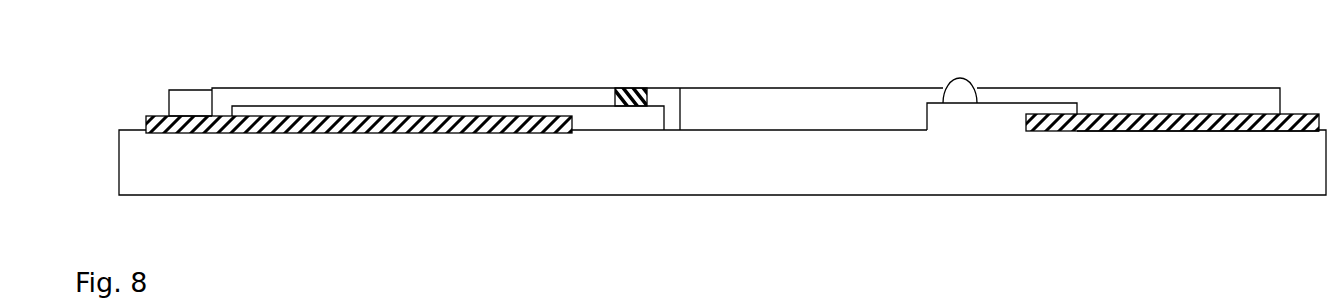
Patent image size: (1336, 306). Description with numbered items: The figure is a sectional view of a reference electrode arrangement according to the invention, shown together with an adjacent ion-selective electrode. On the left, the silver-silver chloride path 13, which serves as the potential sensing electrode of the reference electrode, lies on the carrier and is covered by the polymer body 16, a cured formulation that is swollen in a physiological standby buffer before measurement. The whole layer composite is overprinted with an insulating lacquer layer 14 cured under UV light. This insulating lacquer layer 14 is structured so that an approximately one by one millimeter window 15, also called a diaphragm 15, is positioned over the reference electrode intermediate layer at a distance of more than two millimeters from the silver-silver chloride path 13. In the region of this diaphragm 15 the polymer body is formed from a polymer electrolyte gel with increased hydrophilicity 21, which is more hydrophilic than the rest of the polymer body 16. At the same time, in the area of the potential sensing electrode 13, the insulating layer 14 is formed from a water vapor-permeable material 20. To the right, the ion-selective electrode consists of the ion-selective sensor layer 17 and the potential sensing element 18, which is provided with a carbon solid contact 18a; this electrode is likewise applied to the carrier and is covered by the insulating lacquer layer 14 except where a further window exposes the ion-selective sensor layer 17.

The silver-silver chloride path 13 is at (340, 133).
The insulating lacquer layer 14 is at (220, 65).
The window 15 is at (614, 60).
The polymer body 16 is at (597, 117).
The ion-selective sensor layer 17 is at (960, 78).
The potential sensing element 18 is at (1229, 131).
The carbon solid contact 18a is at (945, 130).
The water vapor-permeable material 20 is at (368, 88).
The polymer electrolyte gel with increased hydrophilicity 21 is at (640, 88).